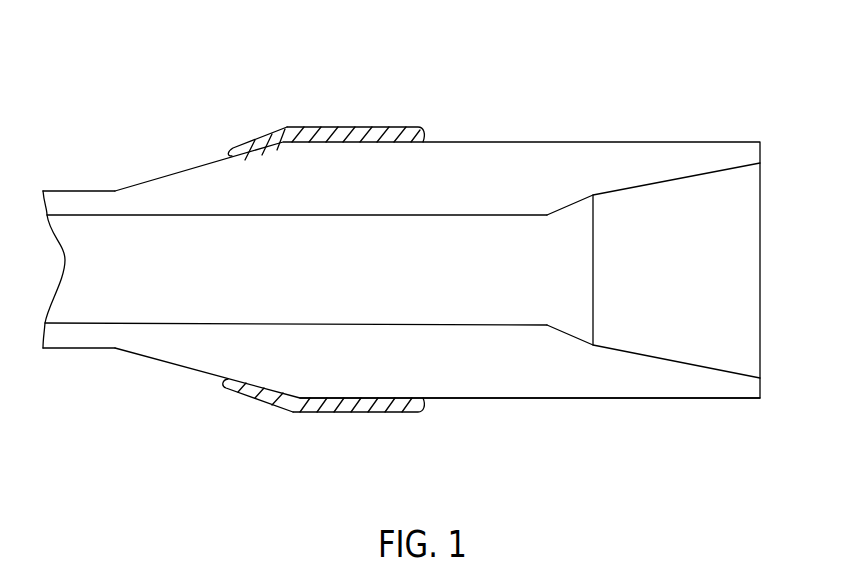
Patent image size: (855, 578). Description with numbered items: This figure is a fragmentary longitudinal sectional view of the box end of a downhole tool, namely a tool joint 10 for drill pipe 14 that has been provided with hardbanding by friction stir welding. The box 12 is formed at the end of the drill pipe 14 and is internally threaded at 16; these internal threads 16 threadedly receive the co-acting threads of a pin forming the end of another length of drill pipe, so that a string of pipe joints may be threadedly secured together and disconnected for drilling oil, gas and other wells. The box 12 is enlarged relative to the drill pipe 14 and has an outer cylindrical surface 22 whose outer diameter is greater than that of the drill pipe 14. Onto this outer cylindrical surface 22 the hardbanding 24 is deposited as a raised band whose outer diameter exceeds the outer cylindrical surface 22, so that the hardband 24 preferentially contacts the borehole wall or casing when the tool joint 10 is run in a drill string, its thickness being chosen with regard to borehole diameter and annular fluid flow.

The tool joint 10 is at (503, 140).
The box 12 is at (573, 378).
The drill pipe 14 is at (83, 349).
The internal threads 16 is at (643, 188).
The outer cylindrical surface 22 is at (478, 399).
The hardbanding 24 is at (348, 124).